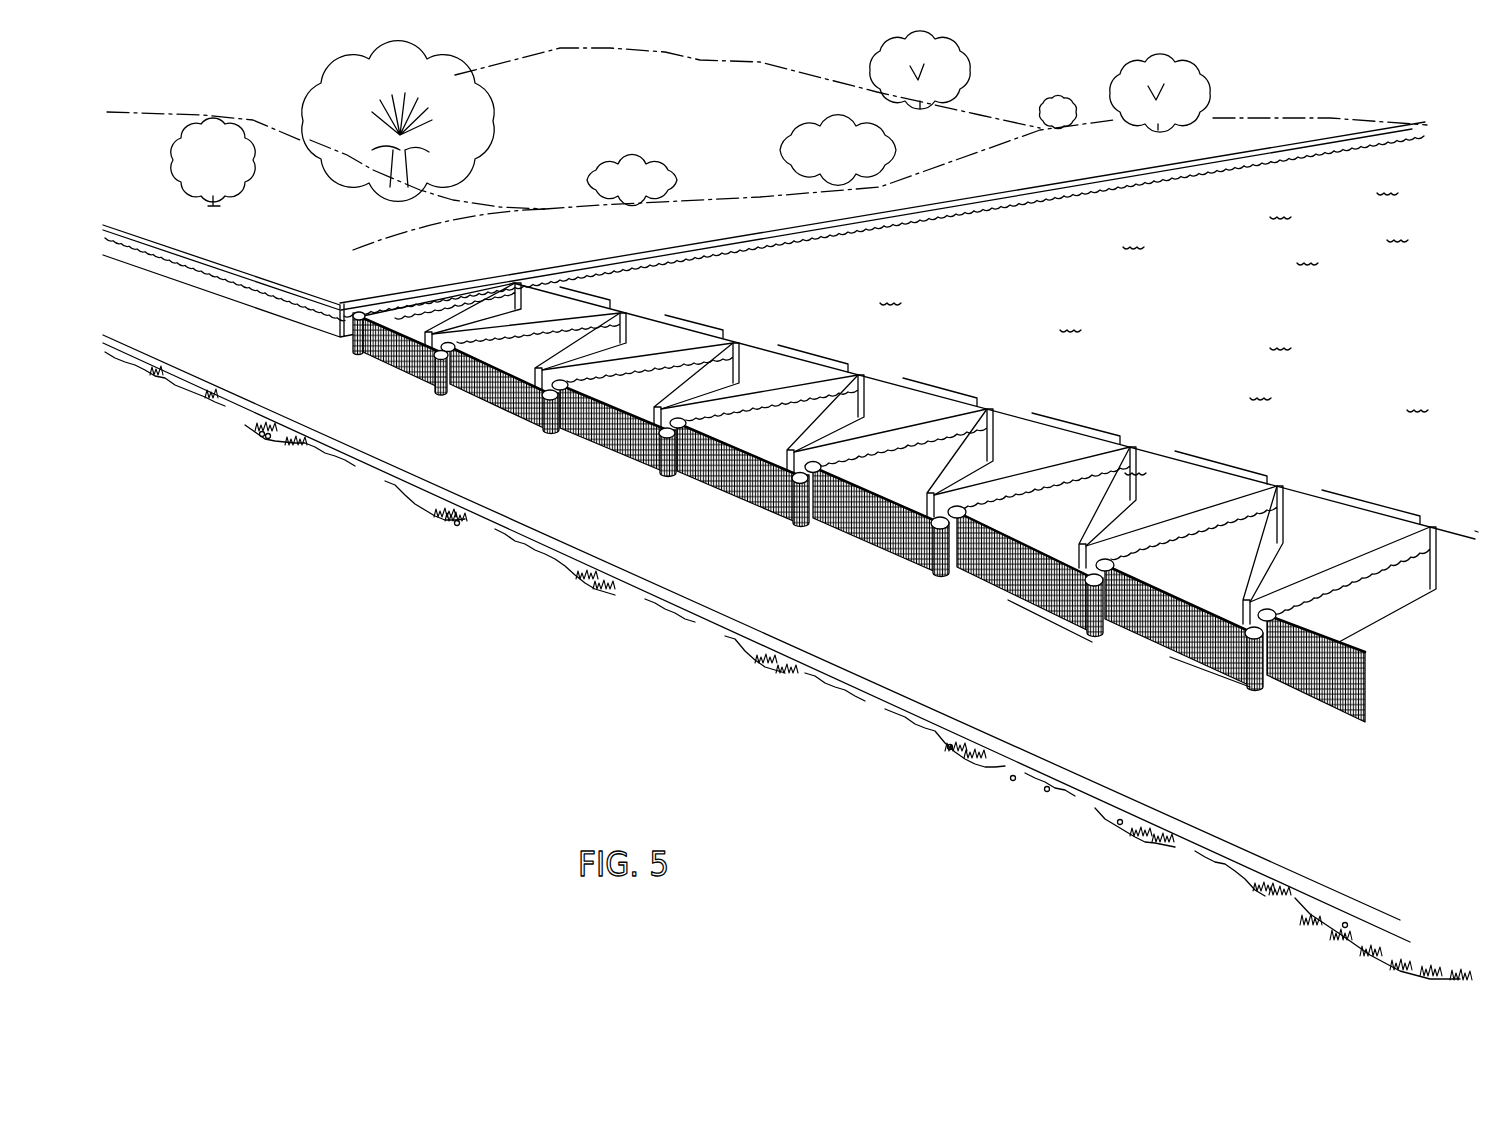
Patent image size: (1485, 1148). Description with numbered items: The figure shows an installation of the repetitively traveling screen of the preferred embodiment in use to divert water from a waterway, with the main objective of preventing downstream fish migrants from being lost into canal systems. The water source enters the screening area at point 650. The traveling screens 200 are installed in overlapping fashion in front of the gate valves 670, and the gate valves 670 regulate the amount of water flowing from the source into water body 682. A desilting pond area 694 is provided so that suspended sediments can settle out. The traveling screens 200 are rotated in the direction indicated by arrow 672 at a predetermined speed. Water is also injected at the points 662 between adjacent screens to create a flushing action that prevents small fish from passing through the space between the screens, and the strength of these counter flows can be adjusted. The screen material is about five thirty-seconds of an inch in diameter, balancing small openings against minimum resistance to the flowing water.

The traveling screens 200 is at (378, 356).
The point 650 is at (157, 305).
The points 662 is at (680, 471).
The gate valves 670 is at (877, 397).
The arrow 672 is at (1113, 629).
The water body 682 is at (1017, 228).
The desilting pond area 694 is at (1180, 344).